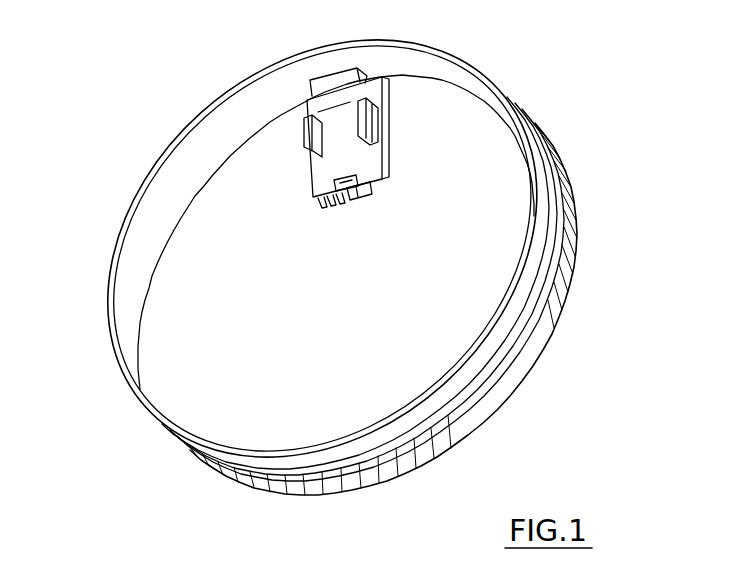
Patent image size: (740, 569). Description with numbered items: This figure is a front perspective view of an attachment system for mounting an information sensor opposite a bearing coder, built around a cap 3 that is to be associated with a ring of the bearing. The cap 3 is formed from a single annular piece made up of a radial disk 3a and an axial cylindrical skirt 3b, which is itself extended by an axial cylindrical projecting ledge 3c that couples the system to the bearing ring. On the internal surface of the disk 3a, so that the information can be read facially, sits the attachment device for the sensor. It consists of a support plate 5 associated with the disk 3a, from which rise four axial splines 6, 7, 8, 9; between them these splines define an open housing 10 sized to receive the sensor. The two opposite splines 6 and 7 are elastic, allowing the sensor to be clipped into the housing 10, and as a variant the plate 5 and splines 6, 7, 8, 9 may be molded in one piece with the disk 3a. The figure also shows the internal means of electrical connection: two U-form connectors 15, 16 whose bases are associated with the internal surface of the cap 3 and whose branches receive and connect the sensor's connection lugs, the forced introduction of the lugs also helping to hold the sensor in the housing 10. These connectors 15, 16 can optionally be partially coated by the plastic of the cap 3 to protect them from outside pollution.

The cap 3 is at (560, 158).
The radial disk 3a is at (215, 383).
The axial cylindrical skirt 3b is at (553, 305).
The axial cylindrical projecting ledge 3c is at (478, 360).
The support plate 5 is at (348, 149).
The axial spline 6 is at (305, 143).
The axial spline 7 is at (368, 122).
The axial spline 8 is at (346, 84).
The axial spline 9 is at (378, 176).
The open housing 10 is at (333, 123).
The connector 15 is at (332, 204).
The connector 16 is at (356, 192).